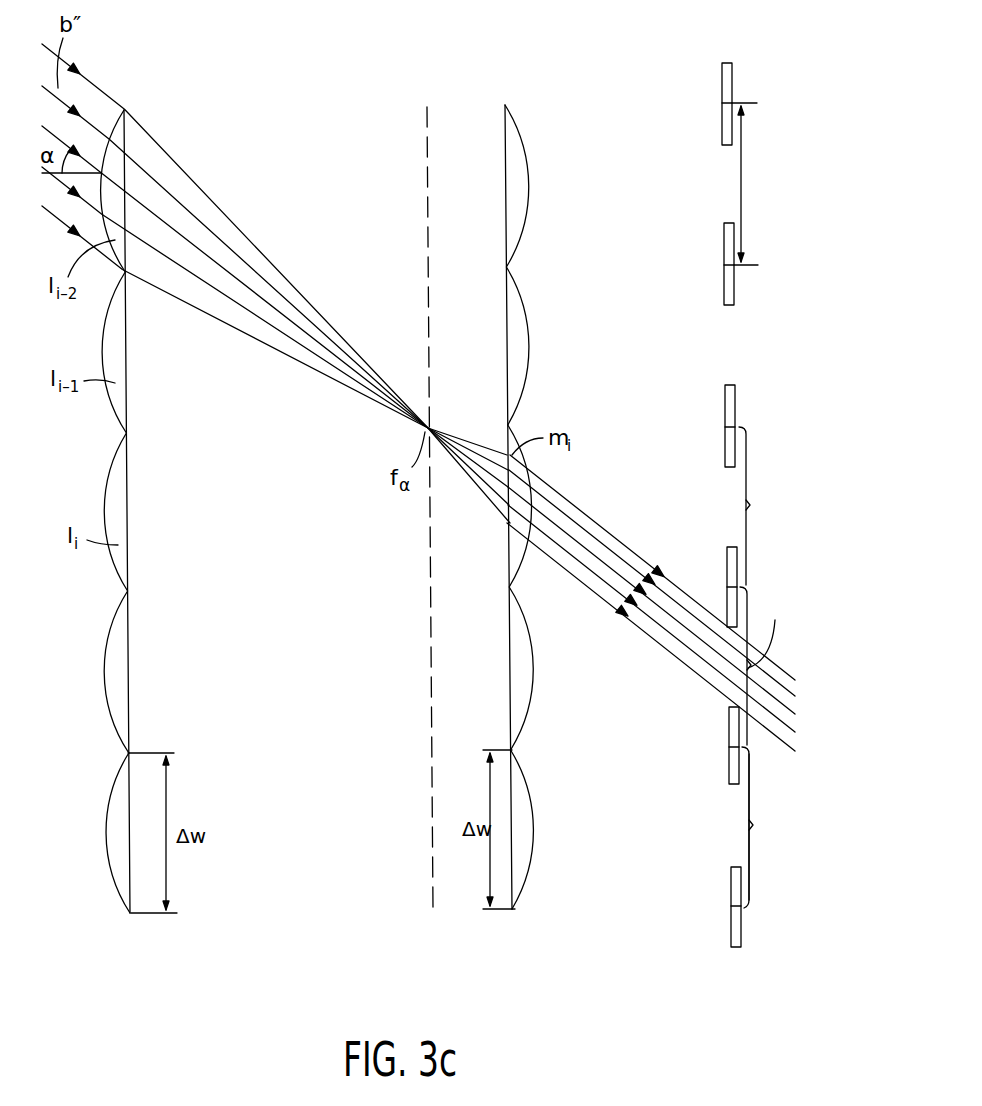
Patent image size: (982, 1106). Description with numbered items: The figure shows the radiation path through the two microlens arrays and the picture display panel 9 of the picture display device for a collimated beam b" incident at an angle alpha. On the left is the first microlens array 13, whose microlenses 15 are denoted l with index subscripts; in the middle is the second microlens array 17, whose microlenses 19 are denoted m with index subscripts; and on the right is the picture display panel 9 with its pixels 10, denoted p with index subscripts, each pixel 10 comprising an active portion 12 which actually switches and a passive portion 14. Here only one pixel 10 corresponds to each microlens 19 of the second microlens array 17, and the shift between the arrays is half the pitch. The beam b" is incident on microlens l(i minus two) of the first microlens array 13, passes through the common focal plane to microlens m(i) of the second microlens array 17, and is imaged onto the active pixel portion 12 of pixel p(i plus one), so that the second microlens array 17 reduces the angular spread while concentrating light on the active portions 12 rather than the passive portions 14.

The picture display panel 9 is at (737, 985).
The pixel 10 is at (766, 827).
The active portion 12 is at (736, 825).
The first microlens array 13 is at (132, 937).
The passive portion 14 is at (733, 883).
The microlens 15 is at (122, 879).
The second microlens array 17 is at (514, 930).
The microlens 19 is at (521, 874).